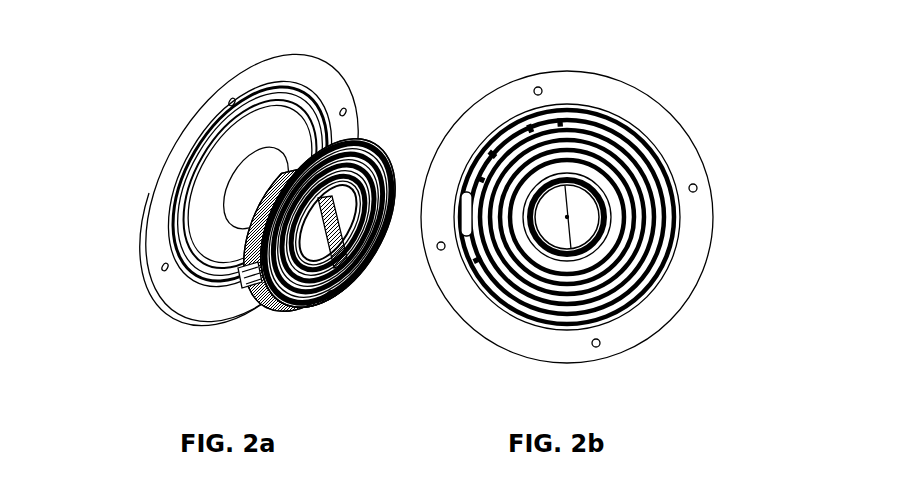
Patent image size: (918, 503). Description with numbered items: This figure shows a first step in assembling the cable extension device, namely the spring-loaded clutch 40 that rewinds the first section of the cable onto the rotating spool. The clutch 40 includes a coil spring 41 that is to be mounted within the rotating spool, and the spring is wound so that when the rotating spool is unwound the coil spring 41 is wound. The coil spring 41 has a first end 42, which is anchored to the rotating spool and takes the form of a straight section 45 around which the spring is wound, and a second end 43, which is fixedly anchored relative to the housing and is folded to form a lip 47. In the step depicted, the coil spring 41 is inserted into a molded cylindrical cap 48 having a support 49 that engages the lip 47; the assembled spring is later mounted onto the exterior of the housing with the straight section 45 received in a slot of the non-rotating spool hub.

In FIG. 2A, the spring-loaded clutch 40 is at (294, 229).
In FIG. 2A, the coil spring 41 is at (362, 140).
In FIG. 2B, the first end 42 is at (548, 217).
In FIG. 2A, the second end 43 is at (258, 300).
In FIG. 2B, the straight section 45 is at (567, 213).
In FIG. 2B, the lip 47 is at (460, 214).
In FIG. 2A, the molded cylindrical cap 48 is at (146, 240).
In FIG. 2B, the molded cylindrical cap 48 is at (700, 290).
In FIG. 2A, the support 49 is at (212, 172).